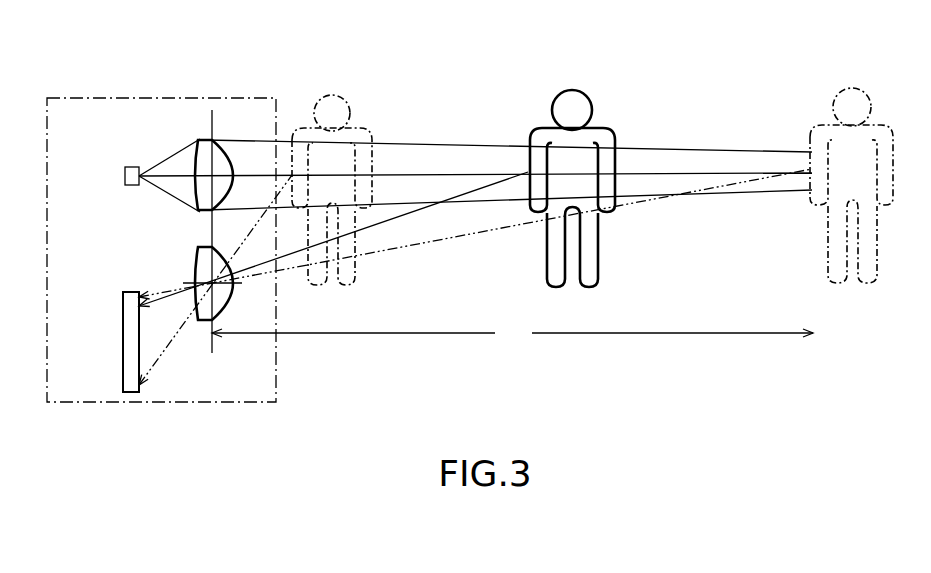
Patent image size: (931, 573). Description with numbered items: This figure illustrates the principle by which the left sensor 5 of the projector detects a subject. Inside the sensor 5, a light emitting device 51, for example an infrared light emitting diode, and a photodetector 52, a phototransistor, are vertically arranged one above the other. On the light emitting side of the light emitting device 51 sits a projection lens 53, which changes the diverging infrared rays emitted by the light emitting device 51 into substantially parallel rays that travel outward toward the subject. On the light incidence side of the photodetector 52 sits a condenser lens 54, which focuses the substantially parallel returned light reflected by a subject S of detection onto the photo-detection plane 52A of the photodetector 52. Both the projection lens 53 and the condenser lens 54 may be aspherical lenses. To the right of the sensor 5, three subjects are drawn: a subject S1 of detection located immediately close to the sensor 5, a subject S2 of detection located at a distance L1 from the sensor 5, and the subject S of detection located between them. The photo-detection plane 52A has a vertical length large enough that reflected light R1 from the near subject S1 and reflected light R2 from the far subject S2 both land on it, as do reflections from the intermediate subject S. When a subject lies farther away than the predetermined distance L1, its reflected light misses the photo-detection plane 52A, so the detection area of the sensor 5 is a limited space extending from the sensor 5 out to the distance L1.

The sensor 5 is at (243, 97).
The light emitting device 51 is at (125, 176).
The photodetector 52 is at (123, 303).
The photo-detection plane 52A is at (142, 343).
The projection lens 53 is at (200, 138).
The condenser lens 54 is at (200, 250).
The reflected light R1 is at (215, 280).
The reflected light R2 is at (475, 234).
The distance L1 is at (512, 333).
The subject of detection S is at (572, 86).
The subject of detection S1 is at (332, 84).
The subject of detection S2 is at (853, 82).